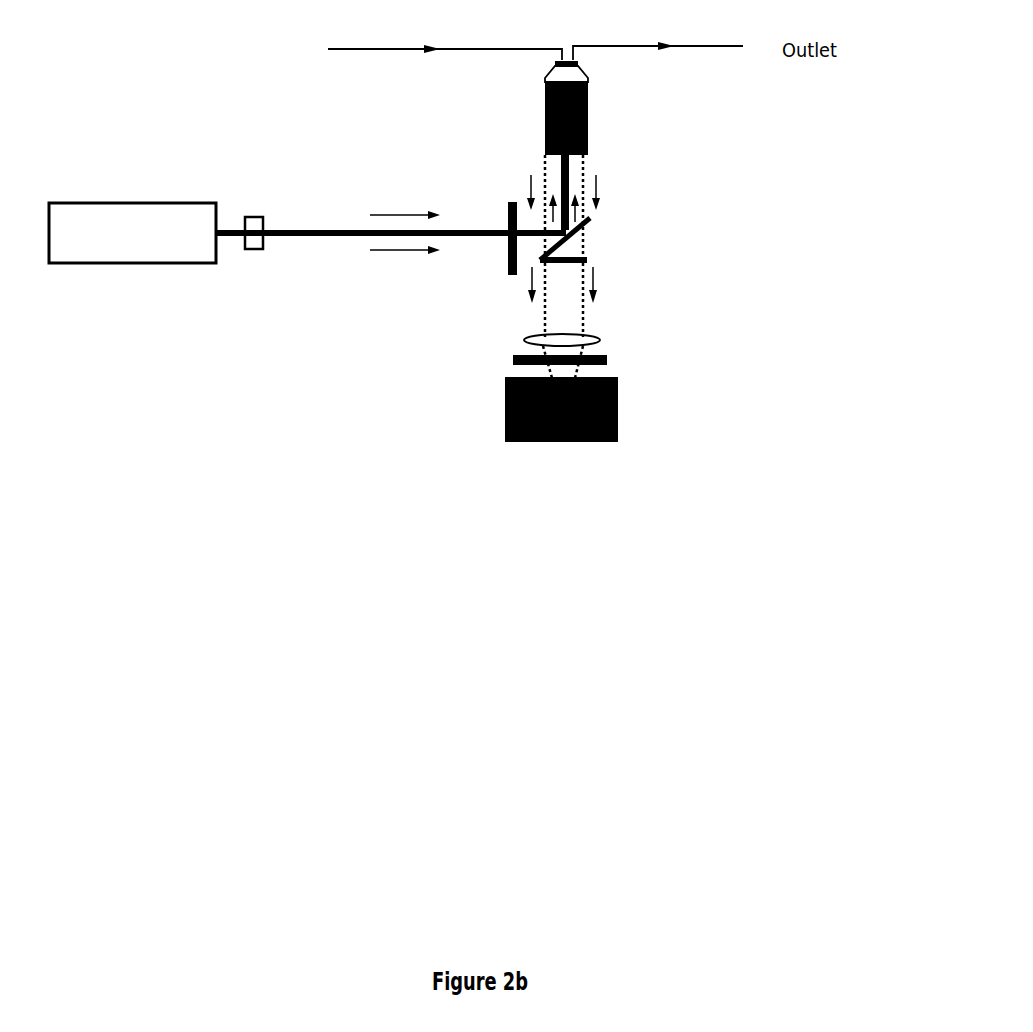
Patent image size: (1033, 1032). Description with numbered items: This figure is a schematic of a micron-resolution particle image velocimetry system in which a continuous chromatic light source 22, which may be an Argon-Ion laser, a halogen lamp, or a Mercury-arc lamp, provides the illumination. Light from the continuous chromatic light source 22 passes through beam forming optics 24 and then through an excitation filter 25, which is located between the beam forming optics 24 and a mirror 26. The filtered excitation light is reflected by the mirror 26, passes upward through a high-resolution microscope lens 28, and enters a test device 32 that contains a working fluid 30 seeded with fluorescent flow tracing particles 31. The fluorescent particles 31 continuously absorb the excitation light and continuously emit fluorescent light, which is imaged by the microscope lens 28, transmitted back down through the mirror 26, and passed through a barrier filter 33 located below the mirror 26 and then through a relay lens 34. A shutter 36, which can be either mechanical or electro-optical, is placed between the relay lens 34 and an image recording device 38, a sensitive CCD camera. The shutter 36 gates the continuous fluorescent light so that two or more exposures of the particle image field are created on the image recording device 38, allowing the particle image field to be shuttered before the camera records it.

The continuous chromatic light source 22 is at (127, 282).
The beam forming optics 24 is at (264, 258).
The excitation filter 25 is at (507, 212).
The mirror 26 is at (588, 230).
The microscope lens 28 is at (588, 93).
The working fluid 30 is at (309, 44).
The fluorescent flow tracing particles 31 is at (312, 55).
The test device 32 is at (543, 70).
The barrier filter 33 is at (588, 260).
The relay lens 34 is at (598, 343).
The shutter 36 is at (395, 423).
The image recording device 38 is at (628, 399).